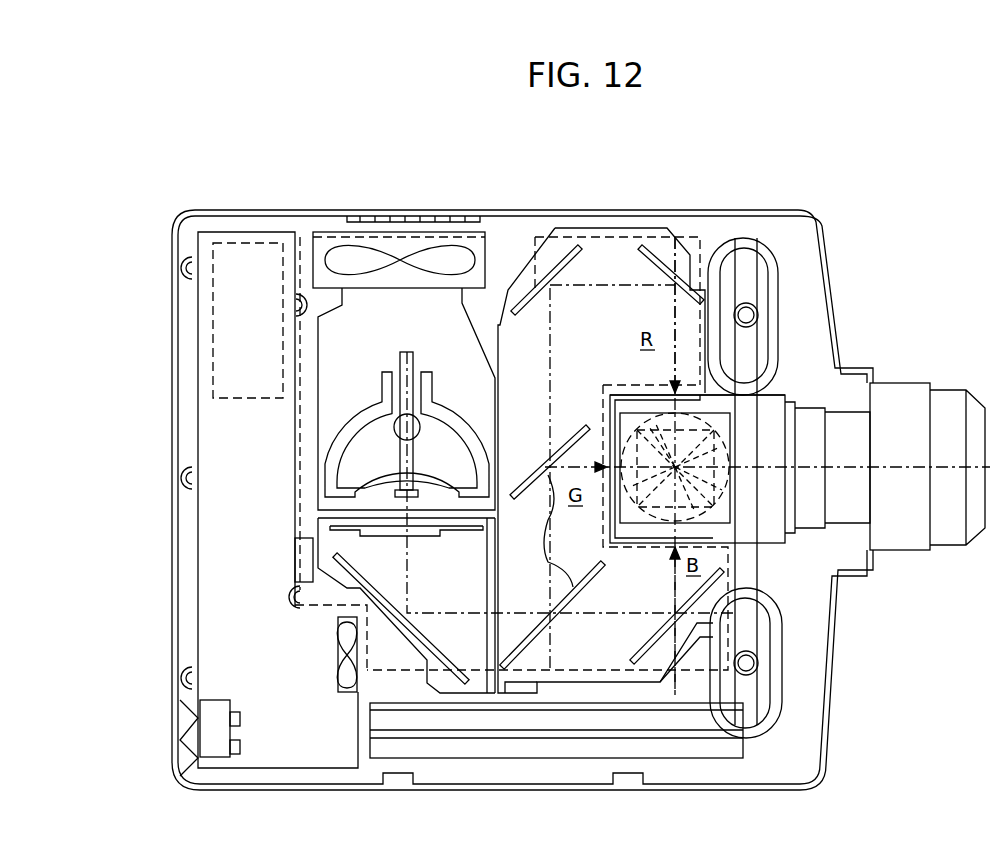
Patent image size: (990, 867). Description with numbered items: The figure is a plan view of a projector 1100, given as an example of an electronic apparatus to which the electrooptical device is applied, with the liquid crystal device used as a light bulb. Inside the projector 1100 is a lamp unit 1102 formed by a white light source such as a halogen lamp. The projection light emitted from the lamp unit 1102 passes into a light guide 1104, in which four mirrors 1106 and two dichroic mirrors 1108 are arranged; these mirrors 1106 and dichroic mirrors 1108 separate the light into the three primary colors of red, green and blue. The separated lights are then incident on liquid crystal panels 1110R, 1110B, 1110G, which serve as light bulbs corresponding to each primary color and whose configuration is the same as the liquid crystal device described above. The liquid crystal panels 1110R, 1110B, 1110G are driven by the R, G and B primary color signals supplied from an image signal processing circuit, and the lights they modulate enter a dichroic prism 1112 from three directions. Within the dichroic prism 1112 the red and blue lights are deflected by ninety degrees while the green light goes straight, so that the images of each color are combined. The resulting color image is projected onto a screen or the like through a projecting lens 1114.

The projector 1100 is at (830, 214).
The lamp unit 1102 is at (447, 337).
The light guide 1104 is at (563, 228).
The mirrors 1106 is at (647, 265).
The dichroic mirrors 1108 is at (537, 531).
The liquid crystal panel 1110R is at (643, 392).
The liquid crystal panel 1110G is at (605, 443).
The liquid crystal panel 1110B is at (645, 545).
The dichroic prism 1112 is at (783, 540).
The projecting lens 1114 is at (958, 398).